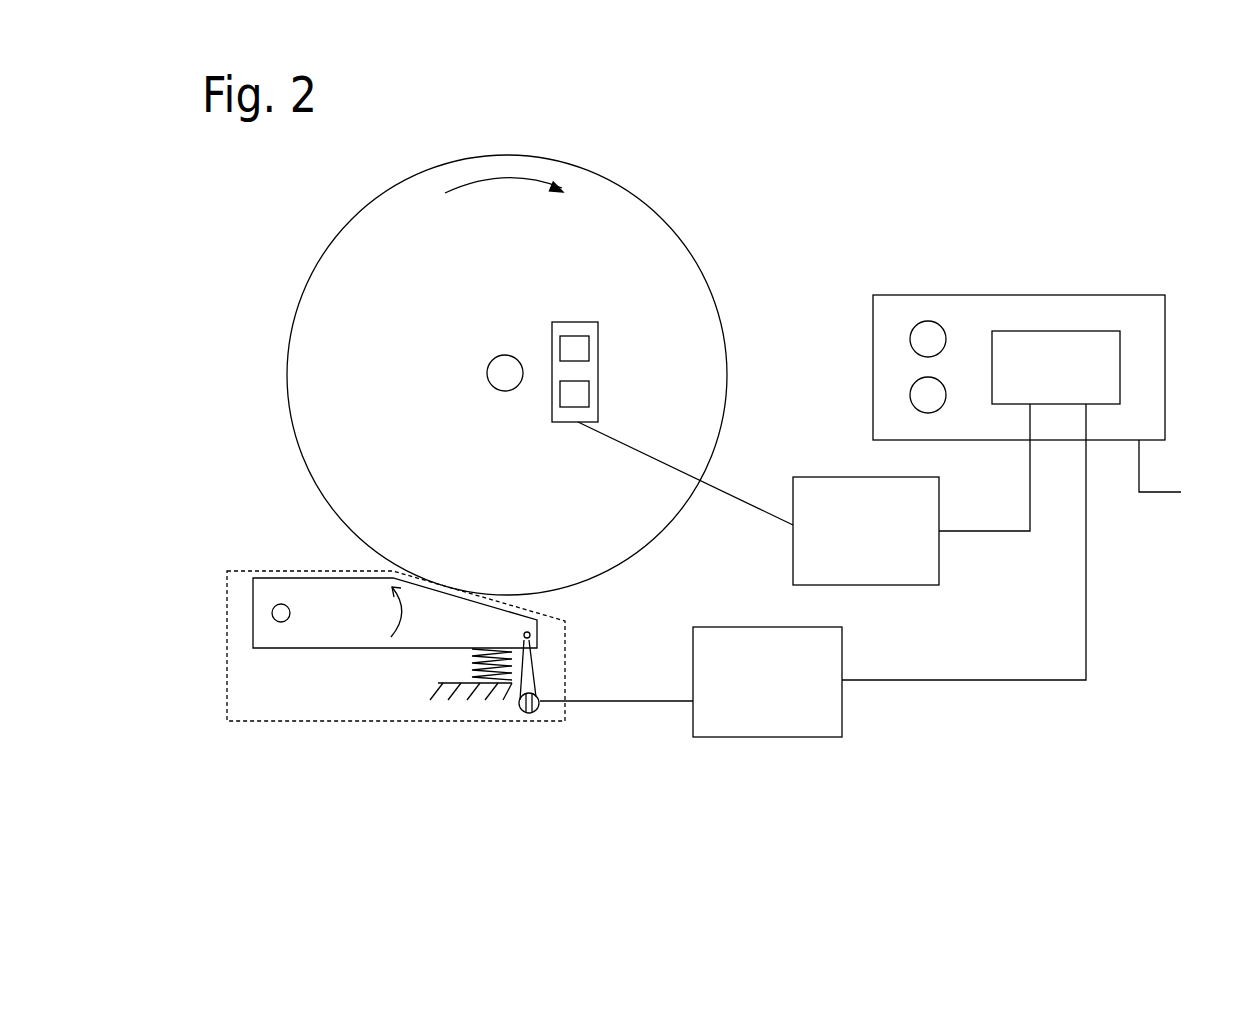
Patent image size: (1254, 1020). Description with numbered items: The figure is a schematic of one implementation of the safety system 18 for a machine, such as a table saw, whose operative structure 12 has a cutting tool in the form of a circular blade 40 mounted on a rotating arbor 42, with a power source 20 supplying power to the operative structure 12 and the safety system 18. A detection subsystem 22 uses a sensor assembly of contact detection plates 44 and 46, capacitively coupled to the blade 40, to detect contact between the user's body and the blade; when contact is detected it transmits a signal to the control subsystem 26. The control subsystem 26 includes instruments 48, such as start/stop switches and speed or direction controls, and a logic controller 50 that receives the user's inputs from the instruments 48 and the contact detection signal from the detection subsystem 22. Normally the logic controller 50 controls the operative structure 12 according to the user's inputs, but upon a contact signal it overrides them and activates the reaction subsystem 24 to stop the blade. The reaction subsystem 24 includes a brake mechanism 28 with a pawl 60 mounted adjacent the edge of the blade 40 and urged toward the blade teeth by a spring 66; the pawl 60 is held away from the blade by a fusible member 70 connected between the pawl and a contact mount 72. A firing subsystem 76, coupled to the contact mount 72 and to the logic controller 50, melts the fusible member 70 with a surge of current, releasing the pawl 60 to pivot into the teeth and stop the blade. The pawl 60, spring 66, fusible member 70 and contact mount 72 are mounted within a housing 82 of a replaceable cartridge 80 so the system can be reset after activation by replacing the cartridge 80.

The operative structure 12 is at (712, 168).
The safety system 18 is at (1005, 198).
The power source 20 is at (1204, 473).
The detection subsystem 22 is at (884, 519).
The reaction subsystem 24 is at (800, 776).
The control subsystem 26 is at (1055, 295).
The brake mechanism 28 is at (301, 674).
The circular blade 40 is at (388, 261).
The arbor 42 is at (498, 375).
The contact detection plate 44 is at (582, 345).
The contact detection plate 46 is at (582, 391).
The instruments 48 is at (917, 342).
The logic controller 50 is at (1066, 372).
The pawl 60 is at (303, 585).
The spring 66 is at (445, 667).
The fusible member 70 is at (533, 687).
The contact mount 72 is at (522, 708).
The firing subsystem 76 is at (786, 667).
The replaceable cartridge 80 is at (258, 761).
The housing 82 is at (318, 725).